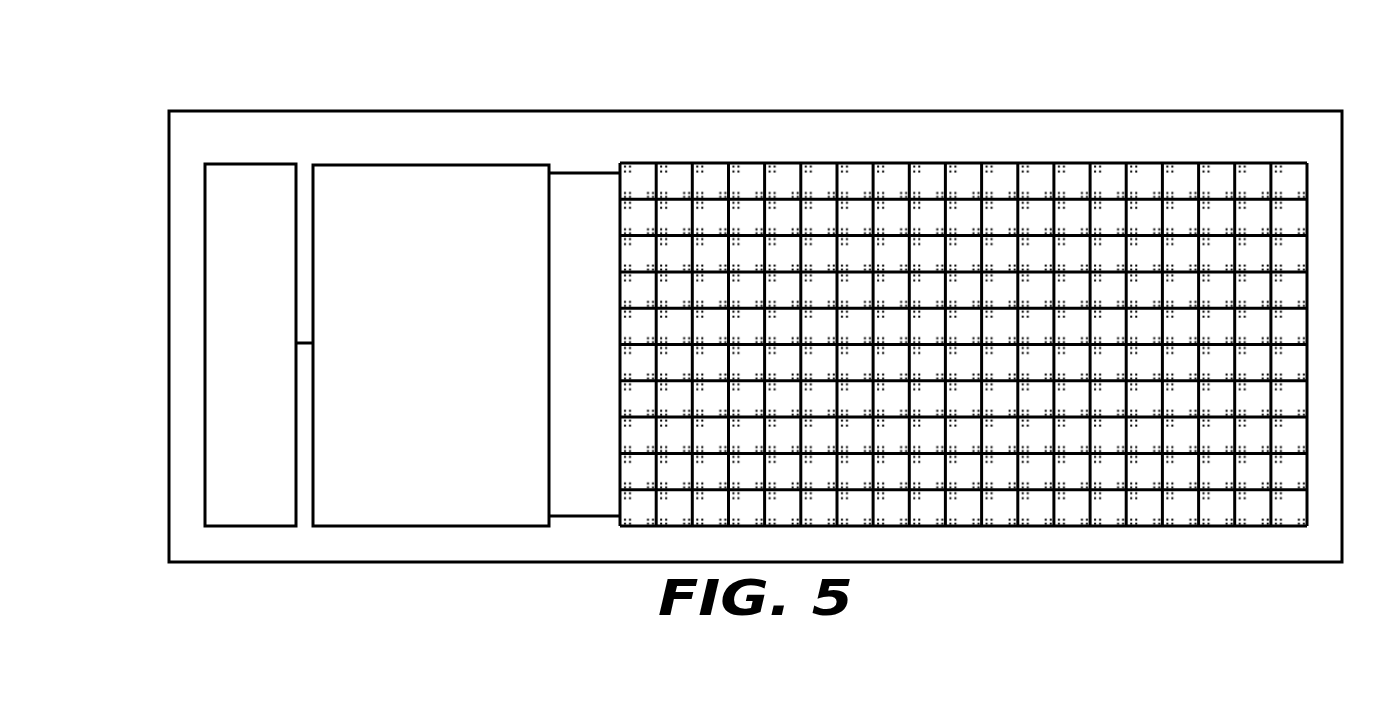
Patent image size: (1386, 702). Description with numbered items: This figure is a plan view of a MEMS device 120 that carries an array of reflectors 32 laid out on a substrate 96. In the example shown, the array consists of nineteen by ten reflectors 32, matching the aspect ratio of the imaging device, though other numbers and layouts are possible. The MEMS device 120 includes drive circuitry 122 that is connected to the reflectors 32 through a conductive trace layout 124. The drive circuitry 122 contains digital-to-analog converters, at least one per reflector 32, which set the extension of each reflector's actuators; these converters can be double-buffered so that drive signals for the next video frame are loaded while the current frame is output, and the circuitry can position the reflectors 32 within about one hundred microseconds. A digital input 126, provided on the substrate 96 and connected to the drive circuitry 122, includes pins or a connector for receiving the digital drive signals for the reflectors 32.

The MEMS device 120 is at (932, 75).
The substrate 96 is at (767, 142).
The reflectors 32 is at (1037, 178).
The conductive trace layout 124 is at (566, 358).
The drive circuitry 122 is at (412, 372).
The digital input 126 is at (236, 398).